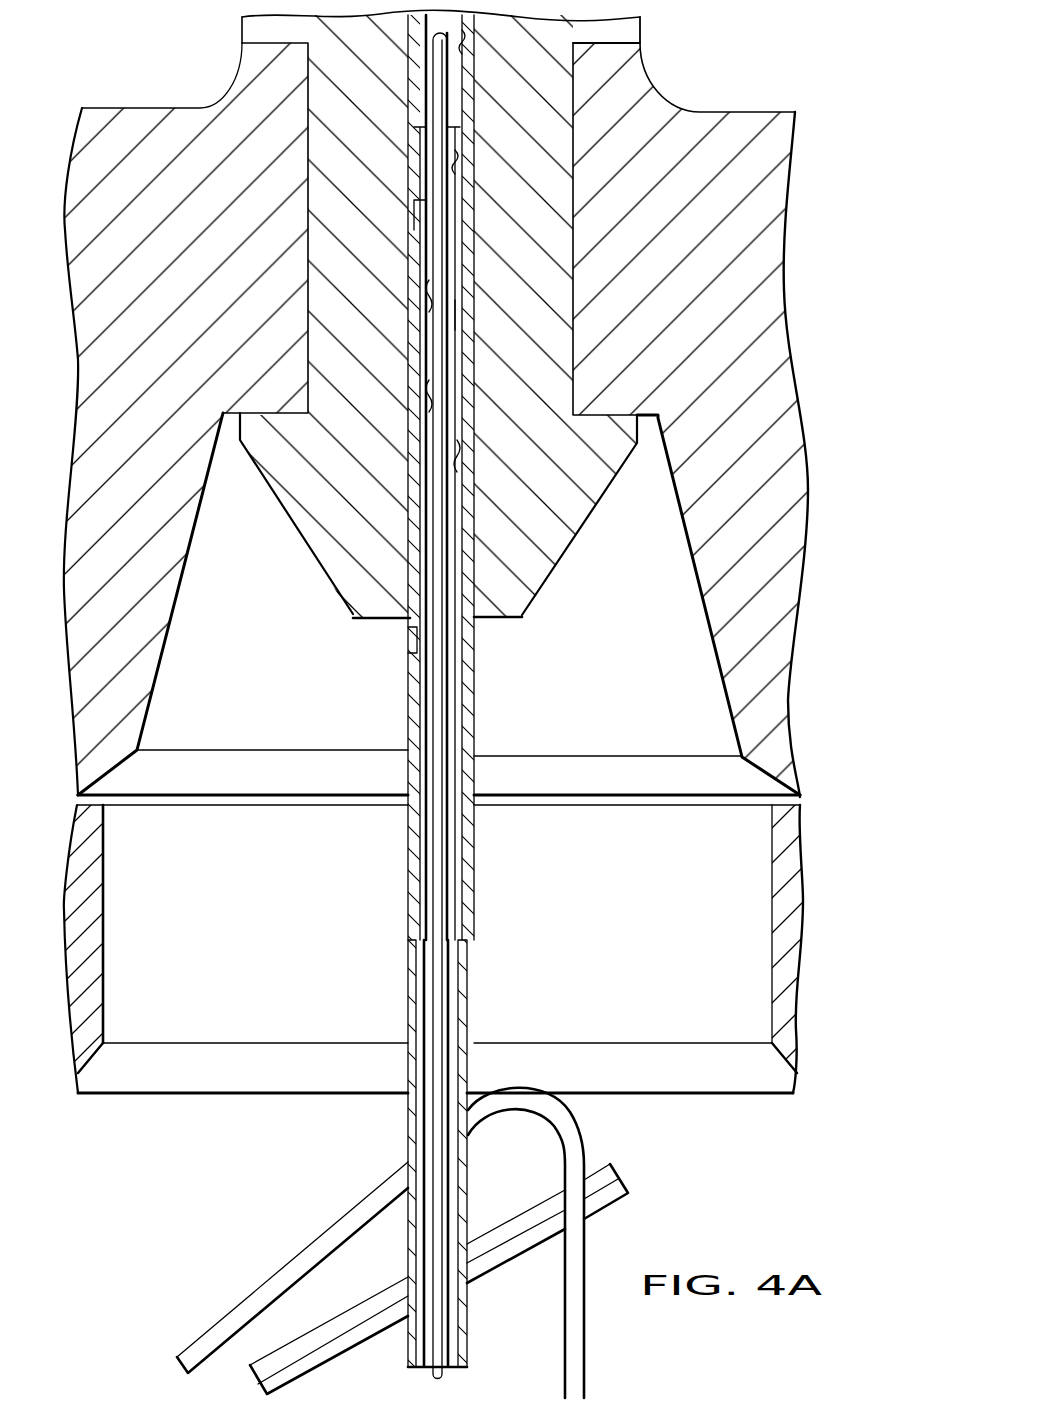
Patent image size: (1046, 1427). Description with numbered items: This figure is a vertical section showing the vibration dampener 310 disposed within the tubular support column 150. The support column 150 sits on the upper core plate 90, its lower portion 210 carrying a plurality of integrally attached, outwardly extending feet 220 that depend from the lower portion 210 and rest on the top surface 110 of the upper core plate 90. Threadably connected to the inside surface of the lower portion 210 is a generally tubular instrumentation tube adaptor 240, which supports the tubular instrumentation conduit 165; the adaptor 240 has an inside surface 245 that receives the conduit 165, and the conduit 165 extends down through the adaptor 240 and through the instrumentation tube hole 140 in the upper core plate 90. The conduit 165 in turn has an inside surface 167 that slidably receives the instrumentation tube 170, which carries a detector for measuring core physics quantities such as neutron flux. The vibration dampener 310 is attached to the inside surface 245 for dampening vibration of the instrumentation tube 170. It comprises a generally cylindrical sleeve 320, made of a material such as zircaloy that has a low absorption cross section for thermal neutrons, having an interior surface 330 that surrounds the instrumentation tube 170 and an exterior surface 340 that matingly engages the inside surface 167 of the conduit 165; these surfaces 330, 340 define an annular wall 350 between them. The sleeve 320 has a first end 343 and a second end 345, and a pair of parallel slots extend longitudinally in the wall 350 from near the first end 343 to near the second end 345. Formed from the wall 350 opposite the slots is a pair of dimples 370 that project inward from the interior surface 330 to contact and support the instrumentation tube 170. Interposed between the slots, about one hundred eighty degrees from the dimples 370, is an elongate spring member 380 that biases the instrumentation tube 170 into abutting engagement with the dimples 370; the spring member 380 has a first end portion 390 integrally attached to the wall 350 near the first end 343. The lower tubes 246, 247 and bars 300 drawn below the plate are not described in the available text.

The upper core plate 90 is at (800, 935).
The top surface 110 is at (790, 795).
The instrumentation tube hole 140 is at (107, 905).
The tubular support column 150 is at (648, 62).
The tubular instrumentation conduit 165 is at (425, 60).
The inside surface of conduit 167 is at (413, 40).
The instrumentation tube 170 is at (440, 77).
The lower portion of support column 210 is at (745, 120).
The feet 220 is at (792, 340).
The instrumentation tube adaptor 240 is at (325, 262).
The inside surface of adaptor 245 is at (470, 48).
The outer tube 246 is at (408, 1115).
The return tube 247 is at (470, 1205).
The support bars 300 is at (327, 1320).
The vibration dampener 310 is at (462, 330).
The cylindrical sleeve 320 is at (414, 143).
The interior surface of sleeve 330 is at (423, 168).
The exterior surface of sleeve 340 is at (565, 246).
The first end of sleeve 343 is at (465, 137).
The second end of sleeve 345 is at (407, 640).
The annular wall 350 is at (460, 410).
The dimples 370 is at (450, 154).
The elongate spring member 380 is at (423, 393).
The first end portion of spring member 390 is at (420, 210).